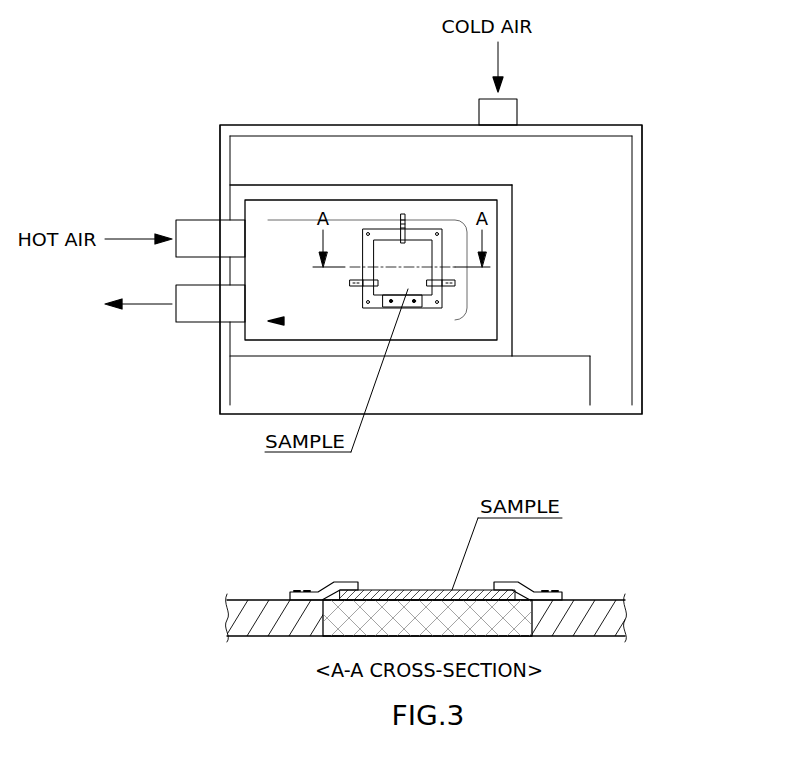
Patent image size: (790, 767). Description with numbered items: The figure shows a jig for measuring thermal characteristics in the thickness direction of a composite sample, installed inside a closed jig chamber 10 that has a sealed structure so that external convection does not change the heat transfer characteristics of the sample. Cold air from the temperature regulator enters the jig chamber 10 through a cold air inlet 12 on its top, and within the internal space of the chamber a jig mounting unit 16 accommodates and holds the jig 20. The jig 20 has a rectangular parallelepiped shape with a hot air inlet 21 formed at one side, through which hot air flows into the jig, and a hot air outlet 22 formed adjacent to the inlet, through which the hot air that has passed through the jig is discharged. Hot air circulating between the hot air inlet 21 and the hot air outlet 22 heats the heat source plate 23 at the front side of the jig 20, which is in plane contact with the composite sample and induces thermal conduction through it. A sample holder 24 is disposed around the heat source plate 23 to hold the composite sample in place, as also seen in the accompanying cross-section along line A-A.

The jig chamber 10 is at (645, 162).
The cold air inlet 12 is at (515, 107).
The jig mounting unit 16 is at (573, 382).
The jig 20 is at (515, 291).
The hot air inlet 21 is at (195, 227).
The hot air outlet 22 is at (192, 313).
The heat source plate 23 is at (422, 228).
The sample holder 24 is at (453, 287).